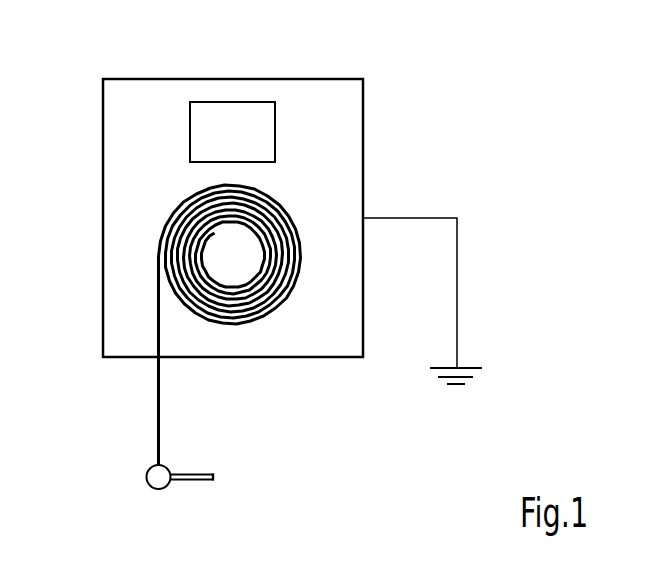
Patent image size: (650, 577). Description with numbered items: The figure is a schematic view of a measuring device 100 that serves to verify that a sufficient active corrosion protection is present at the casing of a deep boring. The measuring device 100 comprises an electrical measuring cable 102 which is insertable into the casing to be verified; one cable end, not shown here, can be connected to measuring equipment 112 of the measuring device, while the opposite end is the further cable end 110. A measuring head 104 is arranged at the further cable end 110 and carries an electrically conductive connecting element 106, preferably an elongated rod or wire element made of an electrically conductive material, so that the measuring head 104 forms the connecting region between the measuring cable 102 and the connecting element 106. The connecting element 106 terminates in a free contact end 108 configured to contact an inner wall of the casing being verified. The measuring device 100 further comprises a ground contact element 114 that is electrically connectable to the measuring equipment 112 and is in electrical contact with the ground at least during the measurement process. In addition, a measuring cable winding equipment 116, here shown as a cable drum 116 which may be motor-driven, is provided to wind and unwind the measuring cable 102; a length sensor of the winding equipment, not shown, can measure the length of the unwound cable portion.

The measuring device 100 is at (389, 90).
The electrical measuring cable 102 is at (155, 405).
The measuring head 104 is at (153, 488).
The connecting element 106 is at (195, 482).
The contact end 108 is at (217, 475).
The further cable end 110 is at (145, 457).
The measuring equipment 112 is at (249, 143).
The ground contact element 114 is at (473, 327).
The measuring cable winding equipment 116 is at (305, 207).